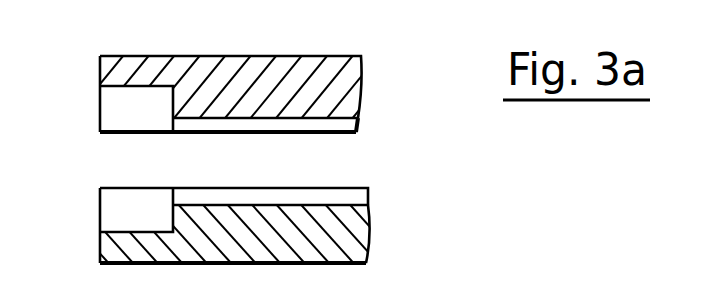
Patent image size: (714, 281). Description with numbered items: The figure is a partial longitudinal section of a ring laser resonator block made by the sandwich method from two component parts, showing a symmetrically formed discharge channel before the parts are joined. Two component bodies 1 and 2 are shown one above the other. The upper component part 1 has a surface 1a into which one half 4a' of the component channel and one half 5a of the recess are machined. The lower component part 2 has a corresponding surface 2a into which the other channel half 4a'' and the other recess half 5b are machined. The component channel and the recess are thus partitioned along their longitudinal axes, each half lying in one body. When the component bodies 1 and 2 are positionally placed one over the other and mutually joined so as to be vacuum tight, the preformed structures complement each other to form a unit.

The component part 1 is at (345, 73).
The surface of component part 1a is at (343, 130).
The half of component channel 4a' is at (308, 87).
The half of recess 5a is at (120, 108).
The component part 2 is at (352, 242).
The surface of component part 2a is at (340, 185).
The half of component channel 4a'' is at (312, 214).
The half of recess 5b is at (120, 214).